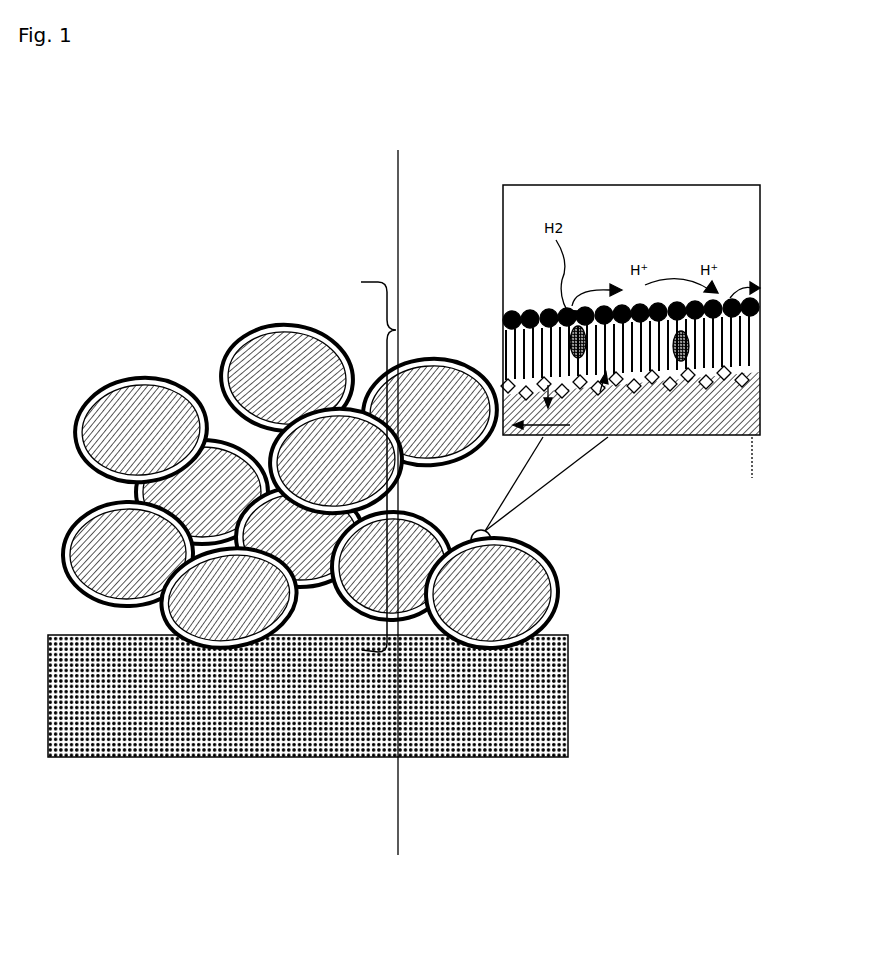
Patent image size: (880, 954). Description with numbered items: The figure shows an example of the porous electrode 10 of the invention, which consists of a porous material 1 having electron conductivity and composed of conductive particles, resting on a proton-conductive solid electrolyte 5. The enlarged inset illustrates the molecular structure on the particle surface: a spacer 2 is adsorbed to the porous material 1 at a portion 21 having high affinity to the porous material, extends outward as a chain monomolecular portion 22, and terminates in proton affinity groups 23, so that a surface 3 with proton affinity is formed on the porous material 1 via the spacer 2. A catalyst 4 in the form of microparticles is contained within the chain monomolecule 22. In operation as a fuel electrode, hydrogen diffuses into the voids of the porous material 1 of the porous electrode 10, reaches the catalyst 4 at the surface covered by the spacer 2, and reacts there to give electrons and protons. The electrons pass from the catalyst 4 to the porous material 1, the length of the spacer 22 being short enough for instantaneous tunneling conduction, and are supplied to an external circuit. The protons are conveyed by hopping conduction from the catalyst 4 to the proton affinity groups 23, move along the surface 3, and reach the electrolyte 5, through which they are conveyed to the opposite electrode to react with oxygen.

The porous material having electron conductivity 1 is at (128, 437).
The spacer 2 is at (199, 398).
The surface having proton affinity 3 is at (289, 330).
The catalyst 4 is at (690, 355).
The proton-conductive solid electrolyte 5 is at (520, 712).
The porous electrode 10 is at (399, 467).
The portion of spacer with affinity to porous material 21 is at (755, 372).
The chain monomolecular portion of spacer 22 is at (752, 343).
The portion of spacer with affinity to proton affinity groups 23 is at (760, 297).